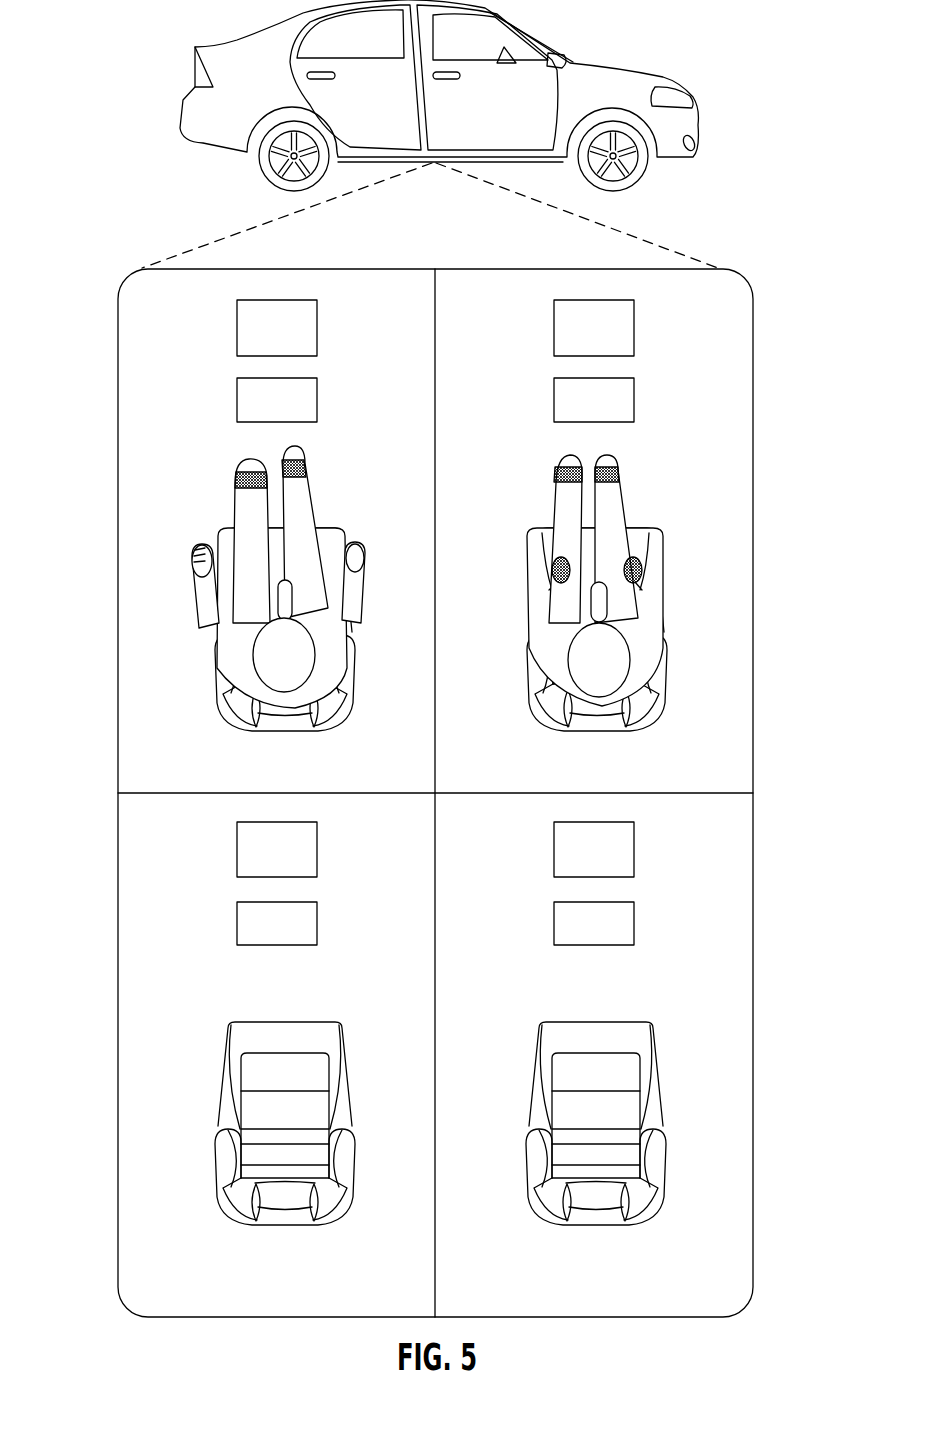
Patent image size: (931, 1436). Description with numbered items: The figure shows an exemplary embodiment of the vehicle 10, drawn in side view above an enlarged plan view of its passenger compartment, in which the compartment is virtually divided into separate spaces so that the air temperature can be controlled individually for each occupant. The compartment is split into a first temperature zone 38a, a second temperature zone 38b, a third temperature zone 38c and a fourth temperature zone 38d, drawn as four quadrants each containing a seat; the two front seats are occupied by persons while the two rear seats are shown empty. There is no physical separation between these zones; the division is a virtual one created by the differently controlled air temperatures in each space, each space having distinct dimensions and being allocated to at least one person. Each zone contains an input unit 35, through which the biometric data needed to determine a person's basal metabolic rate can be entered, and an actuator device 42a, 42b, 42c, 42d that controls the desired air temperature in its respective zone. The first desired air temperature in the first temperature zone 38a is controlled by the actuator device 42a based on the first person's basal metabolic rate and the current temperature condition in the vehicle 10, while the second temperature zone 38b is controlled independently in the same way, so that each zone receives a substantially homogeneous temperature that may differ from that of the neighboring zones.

The vehicle 10 is at (181, 106).
The input unit 35 is at (608, 867).
The first temperature zone 38a is at (147, 433).
The second temperature zone 38b is at (728, 437).
The third temperature zone 38c is at (143, 955).
The fourth temperature zone 38d is at (733, 962).
The actuator device 42a is at (298, 412).
The actuator device 42b is at (615, 412).
The actuator device 42c is at (298, 936).
The actuator device 42d is at (615, 936).